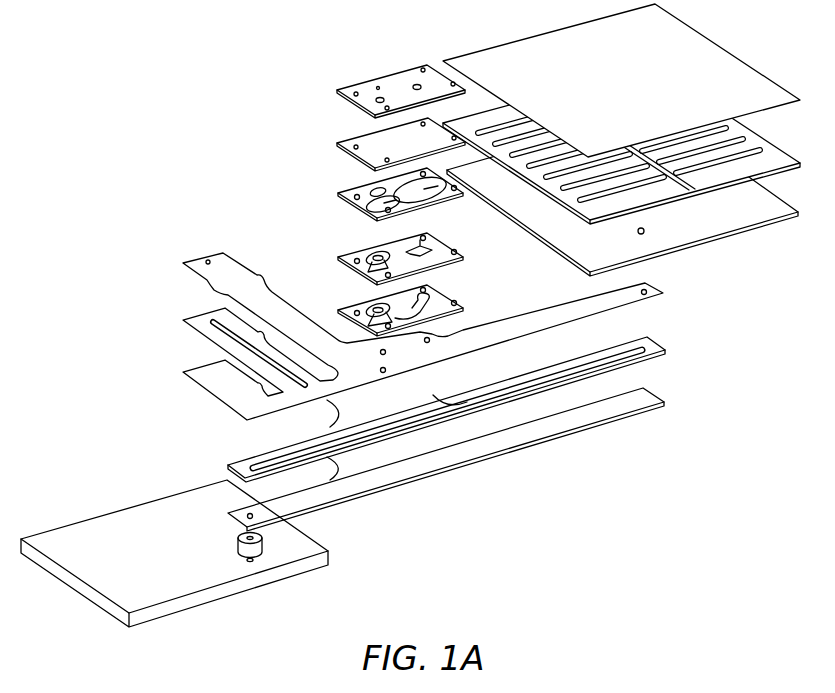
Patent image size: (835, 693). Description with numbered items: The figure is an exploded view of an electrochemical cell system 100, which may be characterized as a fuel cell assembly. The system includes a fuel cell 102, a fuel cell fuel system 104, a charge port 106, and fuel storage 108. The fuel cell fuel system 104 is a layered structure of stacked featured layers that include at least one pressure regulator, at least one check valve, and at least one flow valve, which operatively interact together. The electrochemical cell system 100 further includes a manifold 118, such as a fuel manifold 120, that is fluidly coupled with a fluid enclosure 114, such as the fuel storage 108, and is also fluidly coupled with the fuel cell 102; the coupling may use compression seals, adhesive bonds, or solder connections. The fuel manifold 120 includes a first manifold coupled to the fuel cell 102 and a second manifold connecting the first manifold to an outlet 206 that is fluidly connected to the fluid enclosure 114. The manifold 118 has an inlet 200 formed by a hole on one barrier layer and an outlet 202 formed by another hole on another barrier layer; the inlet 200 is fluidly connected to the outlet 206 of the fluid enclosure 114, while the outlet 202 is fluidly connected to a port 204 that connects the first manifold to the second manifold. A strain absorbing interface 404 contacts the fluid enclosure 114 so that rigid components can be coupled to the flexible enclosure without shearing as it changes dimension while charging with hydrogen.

The electrochemical cell system 100 is at (174, 57).
The fuel cell 102 is at (700, 50).
The fuel cell fuel system 104 is at (333, 83).
The charge port 106 is at (207, 258).
The fuel storage 108 is at (171, 553).
The fluid enclosure 114 is at (122, 506).
The manifold 118 is at (643, 397).
The fuel manifold 120 is at (833, 180).
The inlet 200 is at (253, 516).
The outlet 202 is at (641, 292).
The port 204 is at (637, 231).
The outlet 206 is at (250, 563).
The strain absorbing interface 404 is at (263, 546).